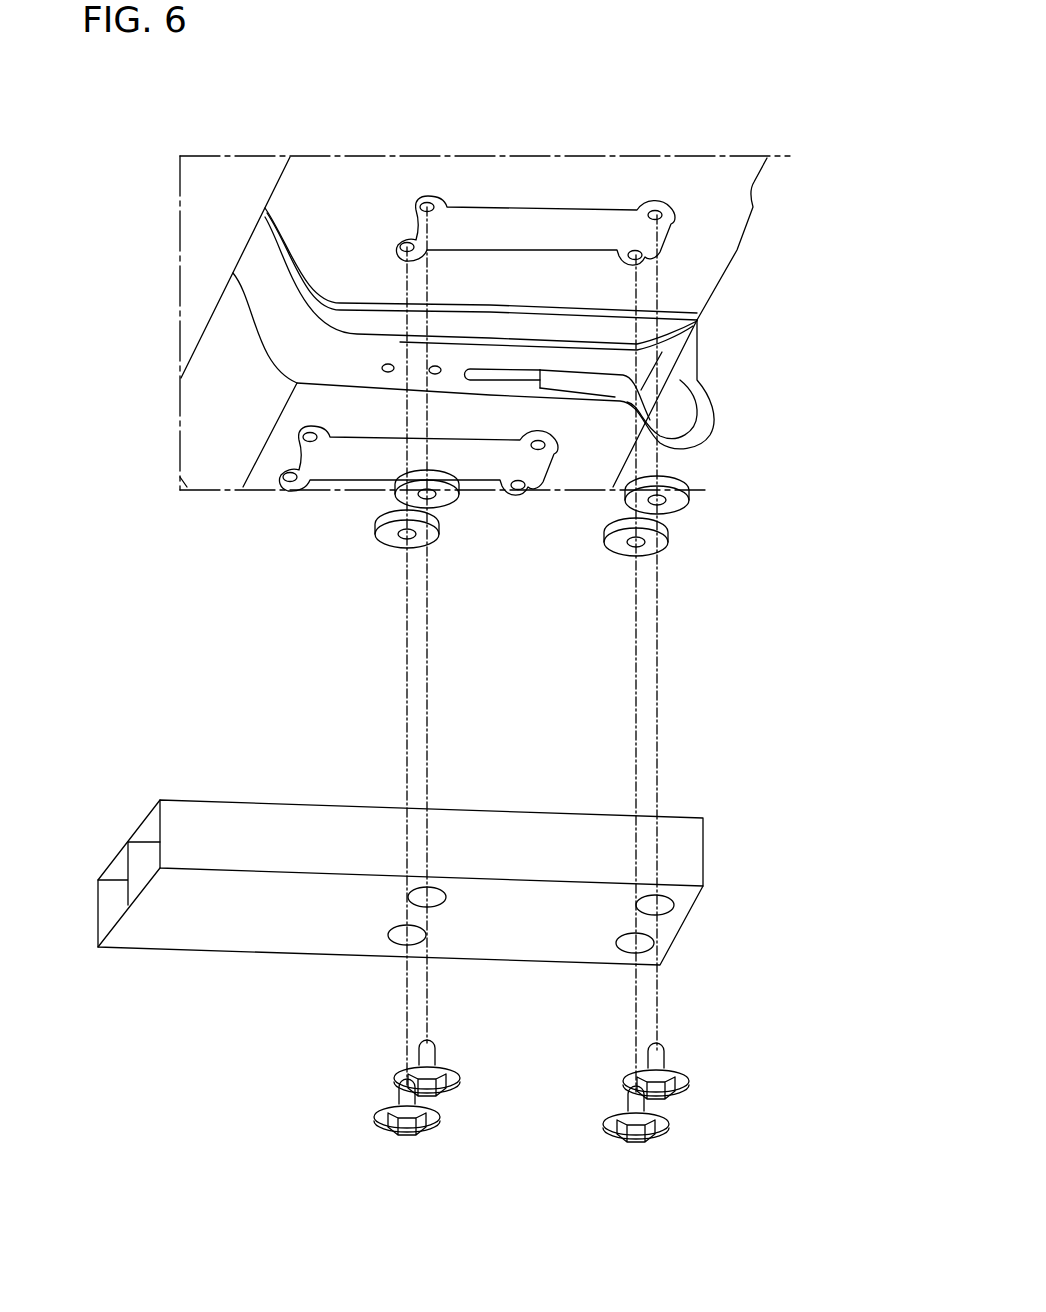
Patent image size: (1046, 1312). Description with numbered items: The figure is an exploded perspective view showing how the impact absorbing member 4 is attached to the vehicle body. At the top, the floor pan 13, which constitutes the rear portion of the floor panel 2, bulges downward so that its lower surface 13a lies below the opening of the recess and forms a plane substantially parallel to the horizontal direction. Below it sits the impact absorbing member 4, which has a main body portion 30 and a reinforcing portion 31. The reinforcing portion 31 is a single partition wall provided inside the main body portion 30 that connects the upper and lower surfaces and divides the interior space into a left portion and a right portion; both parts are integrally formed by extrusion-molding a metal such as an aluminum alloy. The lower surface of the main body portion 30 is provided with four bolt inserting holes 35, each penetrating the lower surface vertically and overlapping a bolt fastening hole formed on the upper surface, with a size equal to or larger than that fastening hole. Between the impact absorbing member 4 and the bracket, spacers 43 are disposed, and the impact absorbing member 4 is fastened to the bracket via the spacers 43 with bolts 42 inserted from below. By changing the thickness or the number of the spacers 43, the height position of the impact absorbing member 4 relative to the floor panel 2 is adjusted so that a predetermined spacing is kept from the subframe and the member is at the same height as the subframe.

The floor panel 2 is at (330, 152).
The floor pan 13 is at (510, 326).
The lower surface 13a is at (695, 259).
The main body portion 30 is at (293, 820).
The reinforcing portion 31 is at (142, 860).
The bolt inserting hole 35 is at (397, 950).
The impact absorbing member 4 is at (230, 962).
The bolt 42 is at (437, 1098).
The spacer 43 is at (390, 543).